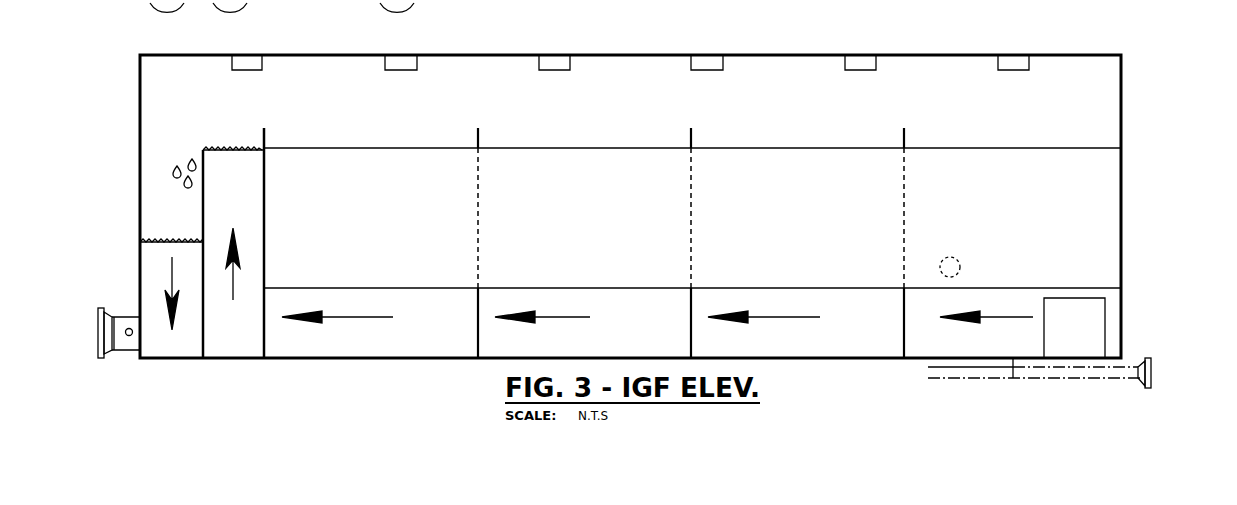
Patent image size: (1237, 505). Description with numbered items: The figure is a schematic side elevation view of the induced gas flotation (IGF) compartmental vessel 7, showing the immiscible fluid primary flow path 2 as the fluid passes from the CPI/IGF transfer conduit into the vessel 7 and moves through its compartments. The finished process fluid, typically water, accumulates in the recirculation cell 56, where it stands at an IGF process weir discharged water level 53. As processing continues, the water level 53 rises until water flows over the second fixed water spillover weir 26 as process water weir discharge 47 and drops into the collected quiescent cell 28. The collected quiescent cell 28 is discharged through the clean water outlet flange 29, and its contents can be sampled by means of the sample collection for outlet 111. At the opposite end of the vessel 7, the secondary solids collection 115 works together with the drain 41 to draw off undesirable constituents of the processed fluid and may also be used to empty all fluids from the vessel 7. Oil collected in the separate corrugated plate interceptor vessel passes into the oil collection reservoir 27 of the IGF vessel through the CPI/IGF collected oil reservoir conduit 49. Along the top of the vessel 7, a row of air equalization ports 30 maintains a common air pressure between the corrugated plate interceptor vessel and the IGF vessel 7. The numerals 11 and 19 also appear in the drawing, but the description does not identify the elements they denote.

The immiscible fluid primary flow path 2 is at (352, 320).
The induced gas flotation (IGF) compartmental vessel 7 is at (798, 392).
The inlet 11 is at (97, 8).
The outlet compartment 19 is at (1077, 297).
The second fixed water spillover weir (IGF) 26 is at (203, 150).
The oil collection reservoir (IGF) 27 is at (599, 217).
The collected quiescent cell 28 is at (167, 335).
The clean water outlet flange 29 is at (99, 337).
The air equalization ports 30 is at (249, 68).
The drain 41 is at (1144, 359).
The process water weir discharge #2 47 is at (173, 163).
The CPI/IGF collected oil reservoir conduit 49 is at (957, 263).
The IGF process weir discharged water level 53 is at (235, 152).
The recirculation cell 56 is at (248, 335).
The sample collection for outlet 111 is at (129, 327).
The secondary solids collection 115 is at (973, 380).